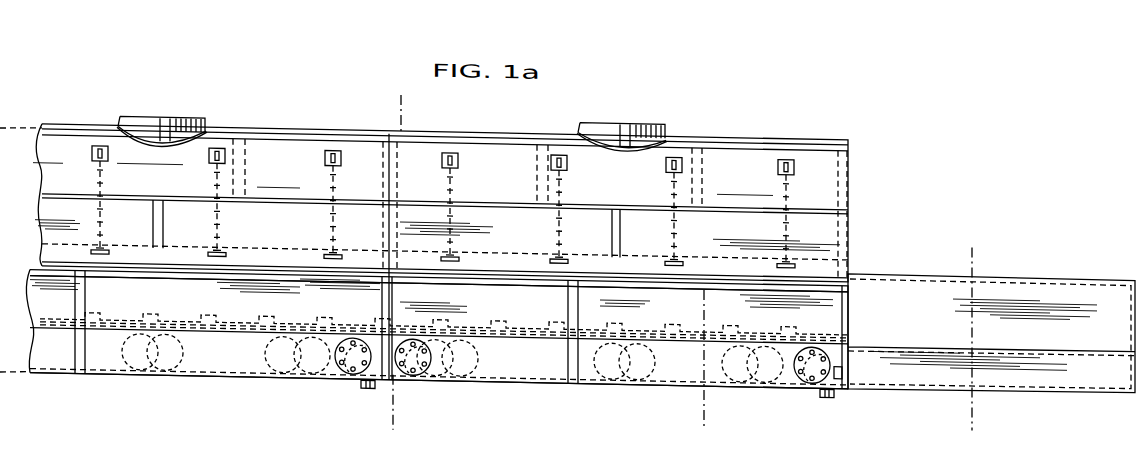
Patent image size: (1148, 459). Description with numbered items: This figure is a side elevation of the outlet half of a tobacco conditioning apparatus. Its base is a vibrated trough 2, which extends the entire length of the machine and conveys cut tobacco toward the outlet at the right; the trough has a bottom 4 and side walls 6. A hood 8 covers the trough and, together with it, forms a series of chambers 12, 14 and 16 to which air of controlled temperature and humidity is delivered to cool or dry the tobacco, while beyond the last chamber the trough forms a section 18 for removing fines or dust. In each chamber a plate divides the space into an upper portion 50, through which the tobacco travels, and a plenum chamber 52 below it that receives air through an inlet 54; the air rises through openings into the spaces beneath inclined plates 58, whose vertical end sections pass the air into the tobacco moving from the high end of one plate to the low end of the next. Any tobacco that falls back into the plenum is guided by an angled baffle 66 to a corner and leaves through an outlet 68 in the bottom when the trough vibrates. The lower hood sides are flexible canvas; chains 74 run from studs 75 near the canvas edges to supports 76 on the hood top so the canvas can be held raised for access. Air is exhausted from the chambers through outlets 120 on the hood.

The trough 2 is at (119, 377).
The bottom 4 is at (698, 294).
The side walls 6 is at (538, 347).
The hood 8 is at (488, 122).
The chamber 12 is at (405, 104).
The chamber 14 is at (251, 226).
The chamber 16 is at (524, 226).
The section 18 is at (914, 302).
The upper portion 50 is at (253, 306).
The plenum chamber 52 is at (242, 356).
The inlet 54 is at (154, 369).
The inclined plates 58 is at (138, 315).
The baffle 66 is at (838, 356).
The outlet 68 is at (369, 381).
The chains 74 is at (97, 203).
The studs 75 is at (325, 252).
The supports 76 is at (325, 148).
The outlets 120 is at (162, 129).